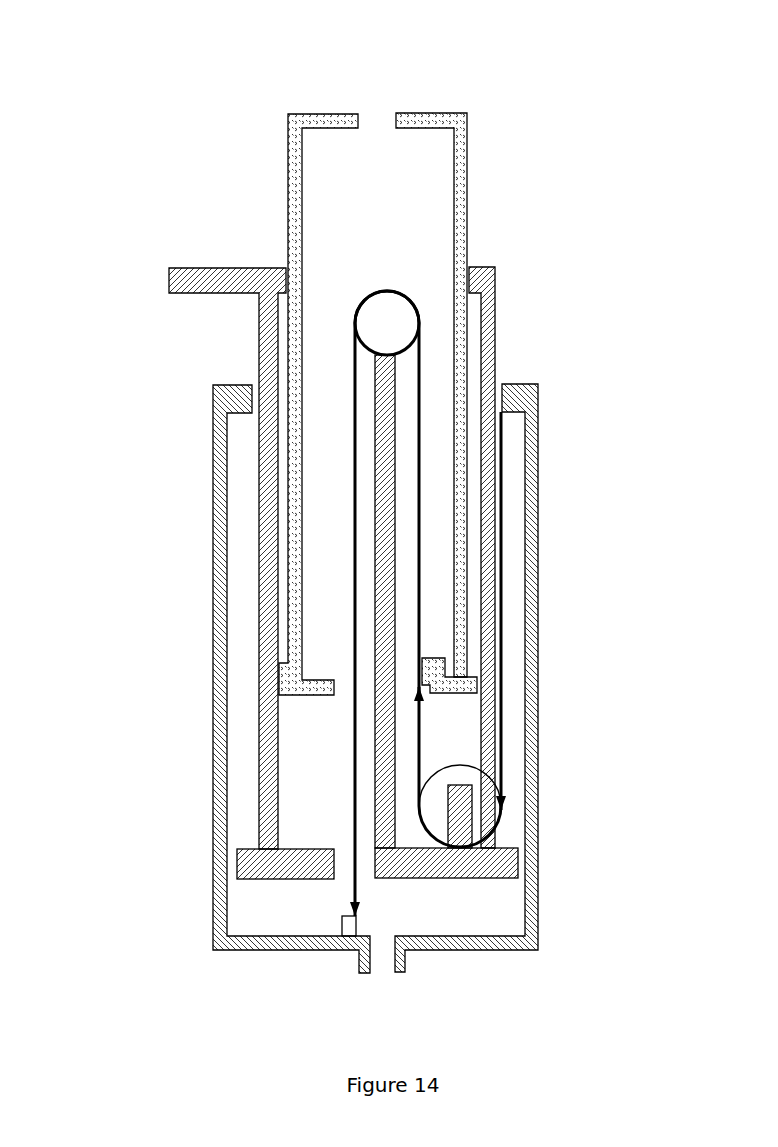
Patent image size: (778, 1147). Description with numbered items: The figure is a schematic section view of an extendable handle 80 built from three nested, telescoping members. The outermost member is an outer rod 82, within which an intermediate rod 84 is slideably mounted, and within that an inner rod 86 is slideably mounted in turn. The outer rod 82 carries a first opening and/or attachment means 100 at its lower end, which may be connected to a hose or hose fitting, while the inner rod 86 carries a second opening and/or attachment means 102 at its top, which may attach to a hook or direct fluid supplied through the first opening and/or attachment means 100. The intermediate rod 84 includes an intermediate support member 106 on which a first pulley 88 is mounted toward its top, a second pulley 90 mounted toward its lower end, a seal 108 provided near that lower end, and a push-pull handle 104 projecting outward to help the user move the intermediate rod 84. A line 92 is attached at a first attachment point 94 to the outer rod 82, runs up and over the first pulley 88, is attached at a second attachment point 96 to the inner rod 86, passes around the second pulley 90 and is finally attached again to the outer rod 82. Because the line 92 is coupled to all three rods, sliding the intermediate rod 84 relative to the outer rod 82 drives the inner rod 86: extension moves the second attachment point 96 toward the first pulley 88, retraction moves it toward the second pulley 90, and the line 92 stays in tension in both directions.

The extendable handle 80 is at (109, 87).
The outer rod 82 is at (214, 748).
The intermediate rod 84 is at (495, 357).
The inner rod 86 is at (467, 200).
The first pulley 88 is at (415, 299).
The second pulley 90 is at (487, 792).
The line 92 is at (414, 474).
The first attachment point 94 is at (340, 922).
The second attachment point 96 is at (431, 673).
The first opening and/or attachment means 100 is at (411, 972).
The second opening and/or attachment means 102 is at (352, 114).
The push-pull handle 104 is at (168, 278).
The intermediate support member 106 is at (375, 595).
The seal 108 is at (238, 845).